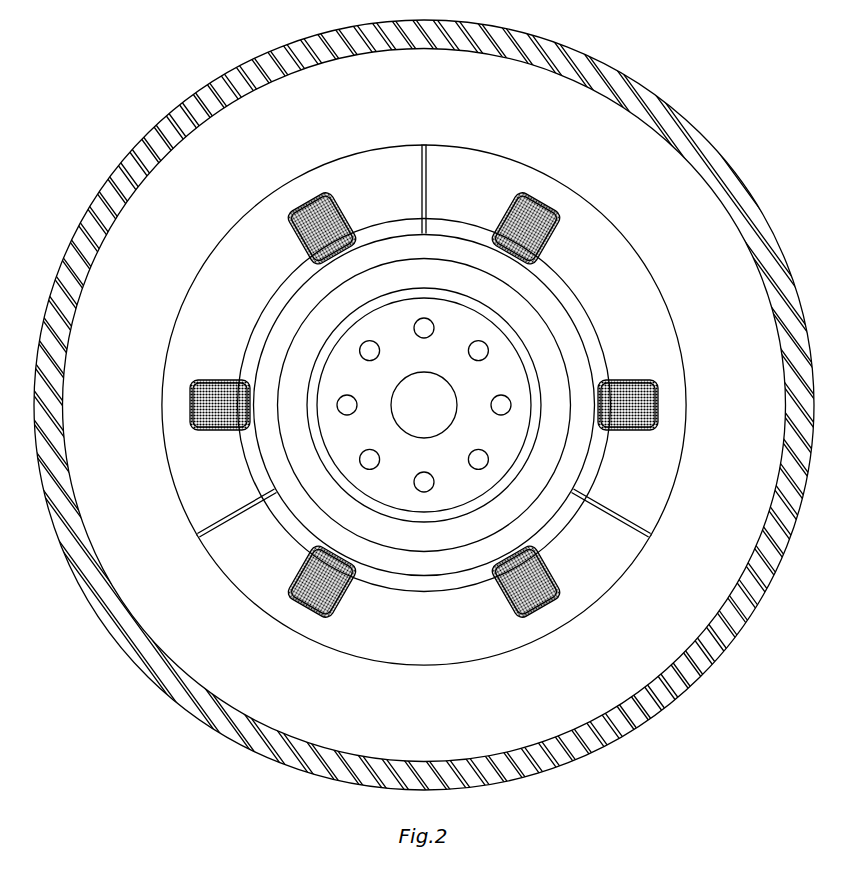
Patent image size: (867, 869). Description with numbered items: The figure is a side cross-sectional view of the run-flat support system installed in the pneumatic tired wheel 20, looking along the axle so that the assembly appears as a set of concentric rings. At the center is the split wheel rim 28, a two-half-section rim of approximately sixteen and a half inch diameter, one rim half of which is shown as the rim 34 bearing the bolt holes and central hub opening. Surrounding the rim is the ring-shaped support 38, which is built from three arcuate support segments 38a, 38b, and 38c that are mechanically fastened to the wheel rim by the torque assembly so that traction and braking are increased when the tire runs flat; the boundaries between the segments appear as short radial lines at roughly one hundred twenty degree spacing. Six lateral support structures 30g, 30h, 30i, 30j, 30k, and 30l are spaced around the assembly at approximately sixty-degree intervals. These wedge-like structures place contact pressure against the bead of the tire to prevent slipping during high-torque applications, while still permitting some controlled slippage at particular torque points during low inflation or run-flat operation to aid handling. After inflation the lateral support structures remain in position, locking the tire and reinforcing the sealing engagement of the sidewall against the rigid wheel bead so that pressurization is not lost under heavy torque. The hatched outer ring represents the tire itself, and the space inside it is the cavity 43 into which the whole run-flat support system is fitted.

The pneumatic tired wheel 20 is at (655, 93).
The split wheel rim 28 is at (440, 340).
The lateral support structure 30g is at (190, 402).
The lateral support structure 30h is at (305, 203).
The lateral support structure 30i is at (553, 202).
The lateral support structure 30j is at (660, 405).
The lateral support structure 30k is at (548, 603).
The lateral support structure 30l is at (303, 603).
The rim 34 is at (560, 507).
The support segments 38 is at (663, 288).
The support segment 38a is at (180, 302).
The support segment 38b is at (682, 340).
The support segment 38c is at (455, 665).
The cavity 43 is at (547, 738).